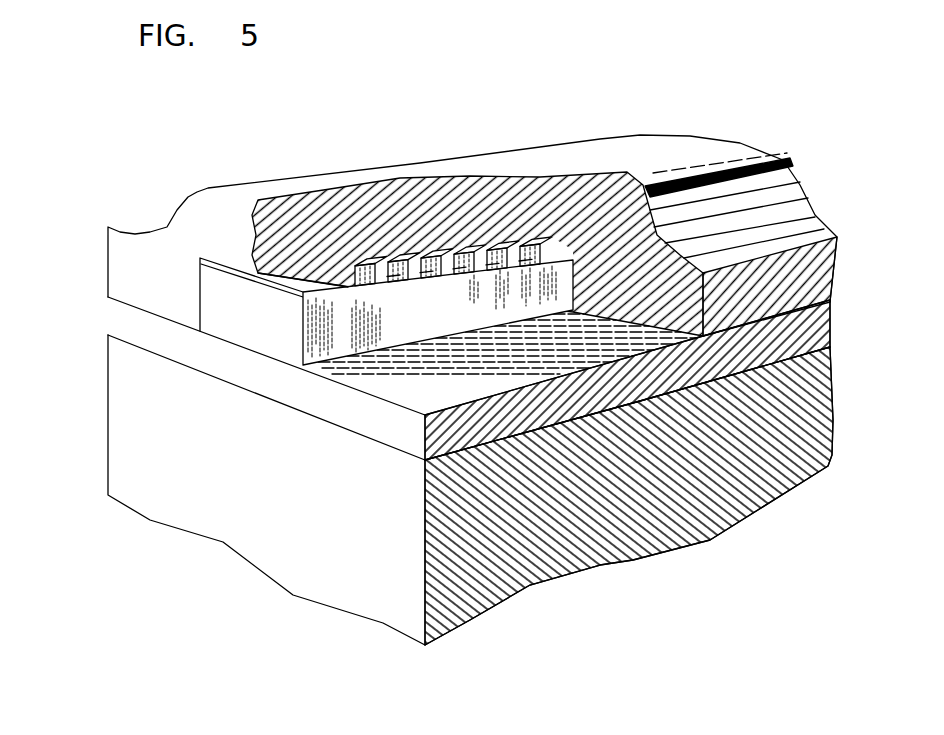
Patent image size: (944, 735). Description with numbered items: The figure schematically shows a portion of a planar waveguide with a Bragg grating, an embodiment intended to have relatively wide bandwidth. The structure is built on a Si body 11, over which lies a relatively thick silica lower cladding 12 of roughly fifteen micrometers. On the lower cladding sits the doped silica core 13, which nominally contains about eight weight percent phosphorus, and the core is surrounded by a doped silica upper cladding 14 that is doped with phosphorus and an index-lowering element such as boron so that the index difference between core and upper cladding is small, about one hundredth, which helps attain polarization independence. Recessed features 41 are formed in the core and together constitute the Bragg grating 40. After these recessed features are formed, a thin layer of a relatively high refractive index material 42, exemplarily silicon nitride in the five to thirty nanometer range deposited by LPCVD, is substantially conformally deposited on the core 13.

The Si body 11 is at (110, 418).
The silica lower cladding 12 is at (118, 319).
The doped silica core 13 is at (283, 340).
The doped silica upper cladding 14 is at (193, 209).
The Bragg grating 40 is at (395, 334).
The recessed features 41 is at (507, 238).
The relatively high refractive index material 42 is at (308, 282).